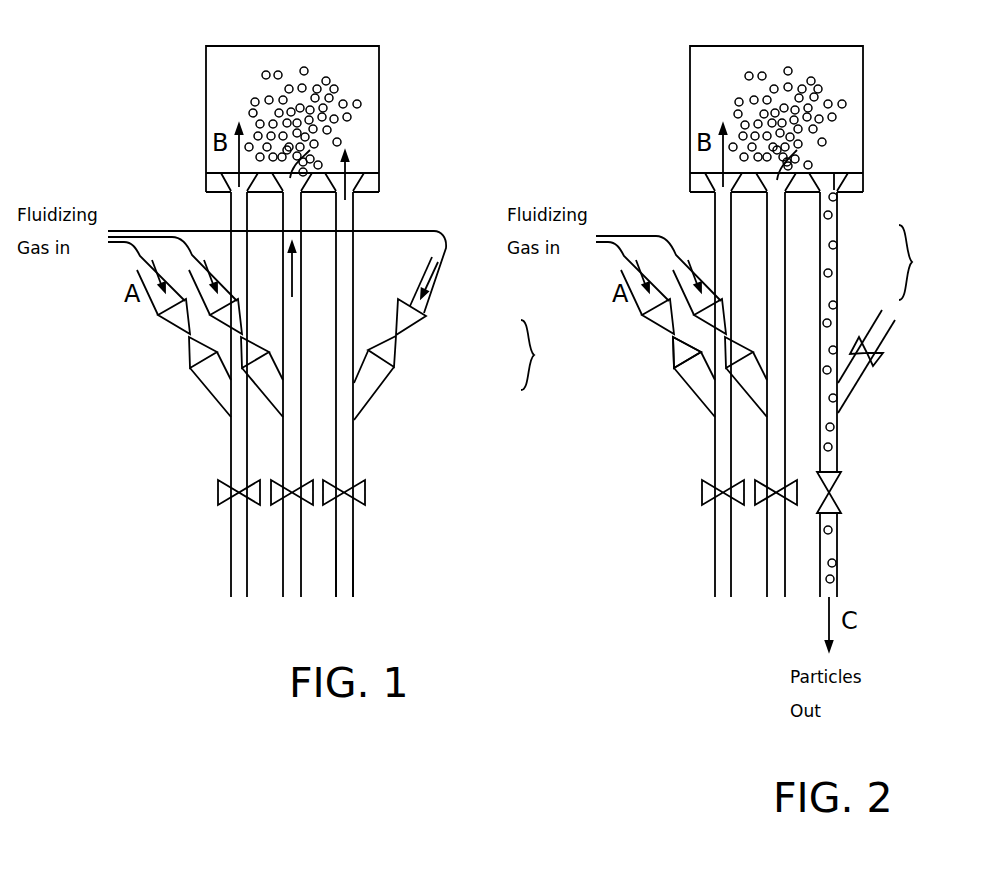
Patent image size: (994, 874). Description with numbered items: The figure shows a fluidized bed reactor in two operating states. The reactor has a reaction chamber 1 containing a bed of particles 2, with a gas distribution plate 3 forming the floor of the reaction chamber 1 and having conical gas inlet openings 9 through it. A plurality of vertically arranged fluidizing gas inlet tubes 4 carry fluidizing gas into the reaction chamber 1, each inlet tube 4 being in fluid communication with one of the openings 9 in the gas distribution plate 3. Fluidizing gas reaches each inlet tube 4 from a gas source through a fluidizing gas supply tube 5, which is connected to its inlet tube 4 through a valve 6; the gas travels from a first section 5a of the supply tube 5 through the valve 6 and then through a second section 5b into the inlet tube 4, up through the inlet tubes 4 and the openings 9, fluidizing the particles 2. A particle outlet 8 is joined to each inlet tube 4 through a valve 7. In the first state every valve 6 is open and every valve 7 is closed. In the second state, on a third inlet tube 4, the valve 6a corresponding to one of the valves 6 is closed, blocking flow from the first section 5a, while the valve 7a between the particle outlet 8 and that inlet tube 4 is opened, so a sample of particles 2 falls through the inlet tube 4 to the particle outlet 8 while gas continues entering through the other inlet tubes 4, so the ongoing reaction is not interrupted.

In FIG. 1, the reaction chamber 1 is at (379, 66).
In FIG. 2, the reaction chamber 1 is at (863, 70).
In FIG. 1, the particles 2 is at (334, 77).
In FIG. 2, the particles 2 is at (788, 67).
In FIG. 1, the gas distribution plate 3 is at (379, 181).
In FIG. 2, the gas distribution plate 3 is at (863, 181).
In FIG. 1, the fluidizing gas inlet tube 4 is at (301, 288).
In FIG. 2, the fluidizing gas inlet tube 4 is at (785, 283).
In FIG. 1, the fluidizing gas supply tube 5 is at (538, 355).
In FIG. 2, the fluidizing gas supply tube 5 is at (916, 262).
In FIG. 1, the first section of fluidizing gas supply tube 5a is at (432, 297).
In FIG. 2, the first section of fluidizing gas supply tube 5a is at (869, 323).
In FIG. 1, the second section of fluidizing gas supply tube 5b is at (377, 385).
In FIG. 2, the second section of fluidizing gas supply tube 5b is at (844, 372).
In FIG. 1, the valve 6 is at (398, 348).
In FIG. 2, the valve 6 is at (672, 352).
In FIG. 2, the valve 6a is at (873, 366).
In FIG. 1, the valve 7 is at (365, 492).
In FIG. 2, the valve 7 is at (740, 504).
In FIG. 2, the valve 7a is at (838, 500).
In FIG. 1, the particle outlet 8 is at (354, 568).
In FIG. 2, the particle outlet 8 is at (840, 555).
In FIG. 1, the gas inlet openings 9 is at (353, 177).
In FIG. 2, the gas inlet openings 9 is at (832, 178).